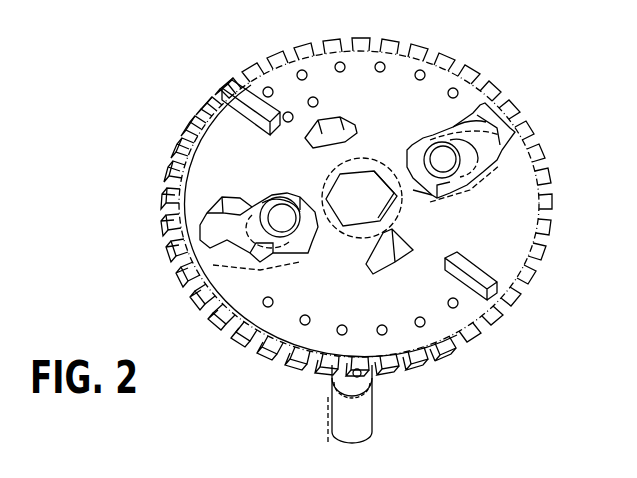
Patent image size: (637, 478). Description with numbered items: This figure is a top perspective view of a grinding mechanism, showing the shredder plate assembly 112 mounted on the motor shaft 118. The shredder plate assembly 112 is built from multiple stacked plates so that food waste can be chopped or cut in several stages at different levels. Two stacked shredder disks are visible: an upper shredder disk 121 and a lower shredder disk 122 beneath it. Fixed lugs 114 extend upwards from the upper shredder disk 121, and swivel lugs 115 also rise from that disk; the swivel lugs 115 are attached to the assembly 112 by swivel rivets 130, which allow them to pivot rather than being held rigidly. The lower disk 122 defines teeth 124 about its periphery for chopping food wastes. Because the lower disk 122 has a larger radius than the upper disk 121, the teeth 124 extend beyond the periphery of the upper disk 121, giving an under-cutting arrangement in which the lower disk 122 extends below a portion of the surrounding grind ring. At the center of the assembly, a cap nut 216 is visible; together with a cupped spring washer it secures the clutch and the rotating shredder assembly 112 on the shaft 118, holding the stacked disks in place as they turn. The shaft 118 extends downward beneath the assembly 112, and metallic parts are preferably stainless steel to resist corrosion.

The shredder plate assembly 112 is at (142, 275).
The fixed lugs 114 is at (250, 94).
The swivel lugs 115 is at (222, 203).
The motor shaft 118 is at (333, 424).
The upper shredder disk 121 is at (224, 132).
The lower shredder disk 122 is at (234, 322).
The teeth 124 is at (261, 348).
The swivel rivets 130 is at (284, 217).
The cap nut 216 is at (340, 192).